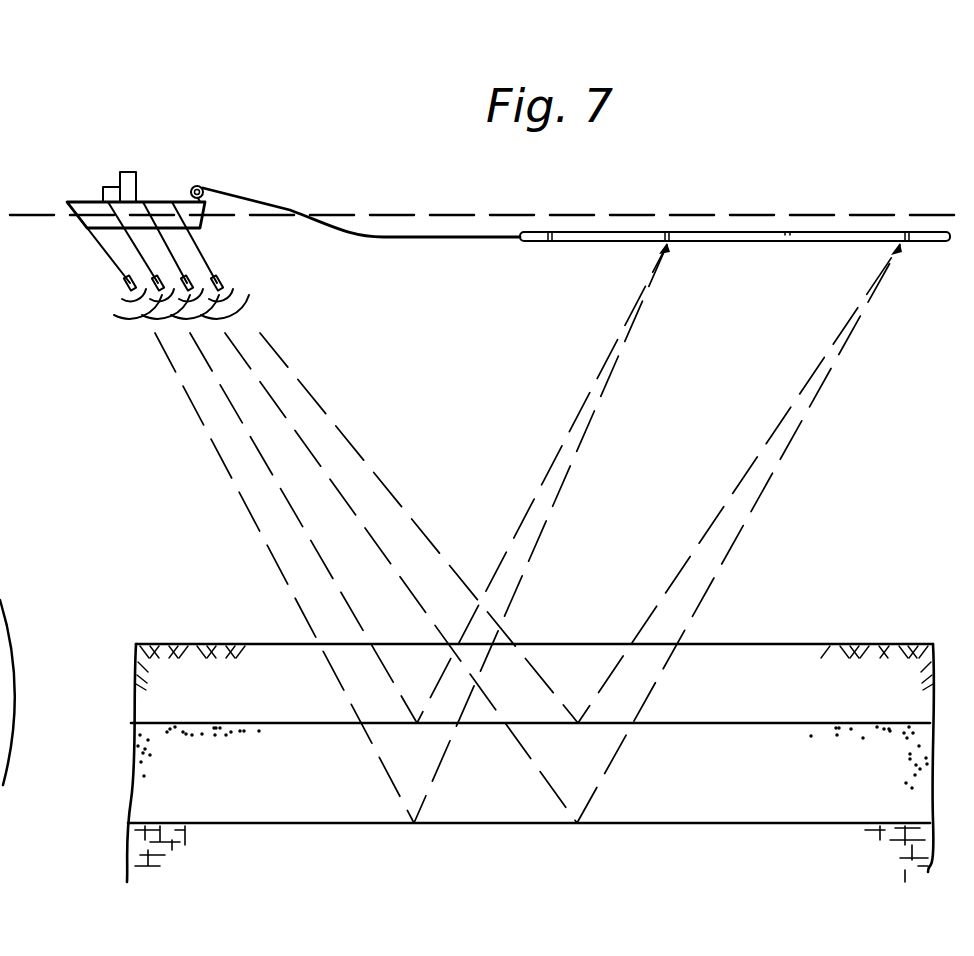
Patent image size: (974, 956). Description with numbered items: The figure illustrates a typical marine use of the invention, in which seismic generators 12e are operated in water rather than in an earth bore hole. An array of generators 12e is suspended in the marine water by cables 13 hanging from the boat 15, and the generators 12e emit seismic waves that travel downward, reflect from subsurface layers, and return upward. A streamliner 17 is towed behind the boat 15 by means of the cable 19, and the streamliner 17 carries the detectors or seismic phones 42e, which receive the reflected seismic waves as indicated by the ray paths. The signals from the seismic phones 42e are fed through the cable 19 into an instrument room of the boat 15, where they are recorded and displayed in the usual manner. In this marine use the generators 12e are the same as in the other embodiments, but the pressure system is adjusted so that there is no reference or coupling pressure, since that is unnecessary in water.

The boat 15 is at (153, 200).
The cables 13 is at (200, 252).
The generators 12e is at (125, 286).
The cable 19 is at (415, 240).
The streamliner 17 is at (733, 243).
The detectors or seismic phones 42e is at (667, 232).